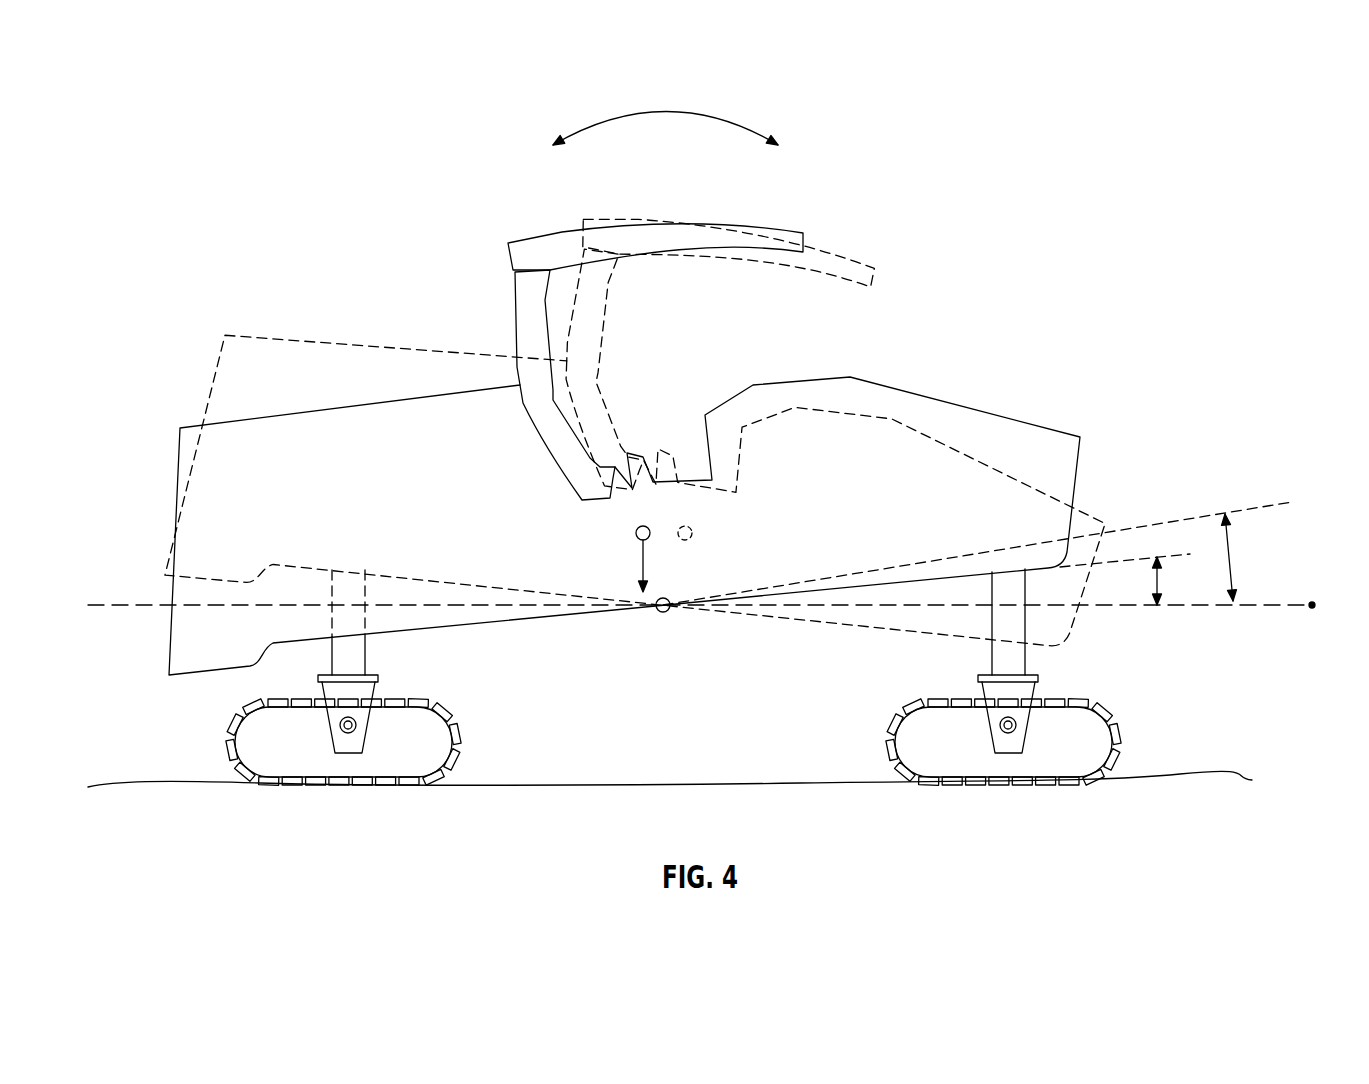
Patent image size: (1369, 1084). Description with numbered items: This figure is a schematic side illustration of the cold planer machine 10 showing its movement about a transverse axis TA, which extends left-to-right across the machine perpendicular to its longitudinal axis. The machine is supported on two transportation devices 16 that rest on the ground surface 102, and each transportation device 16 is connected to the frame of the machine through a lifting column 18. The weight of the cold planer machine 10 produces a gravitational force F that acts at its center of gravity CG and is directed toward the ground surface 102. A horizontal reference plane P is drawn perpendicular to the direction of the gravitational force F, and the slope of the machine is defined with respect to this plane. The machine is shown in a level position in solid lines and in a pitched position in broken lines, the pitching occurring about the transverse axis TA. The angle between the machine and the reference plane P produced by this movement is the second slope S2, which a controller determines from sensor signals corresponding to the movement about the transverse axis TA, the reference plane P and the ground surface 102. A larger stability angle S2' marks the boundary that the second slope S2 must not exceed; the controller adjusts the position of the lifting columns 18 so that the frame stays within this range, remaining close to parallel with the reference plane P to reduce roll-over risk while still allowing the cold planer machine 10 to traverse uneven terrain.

The cold planer machine 10 is at (1085, 230).
The transportation devices 16 is at (453, 746).
The lifting columns 18 is at (366, 648).
The ground surface 102 is at (1218, 773).
The center of gravity CG is at (642, 518).
The gravitational force F is at (640, 565).
The transverse axis TA is at (662, 614).
The second slope S2 is at (1141, 579).
The stability angle boundary for second slope S2' is at (981, 553).
The reference plane P is at (1280, 613).